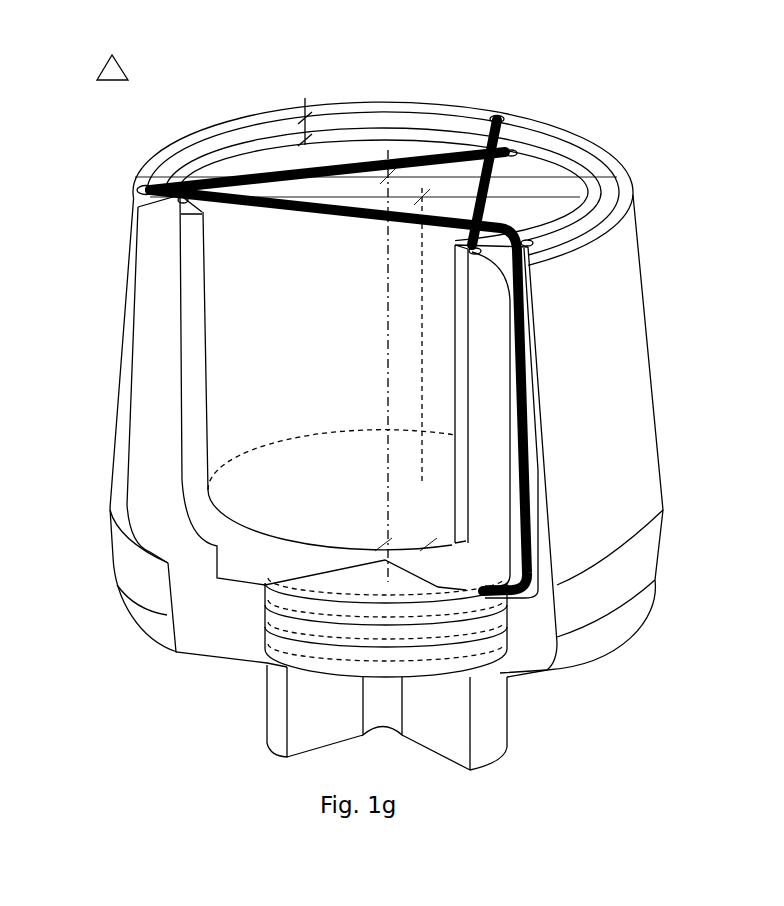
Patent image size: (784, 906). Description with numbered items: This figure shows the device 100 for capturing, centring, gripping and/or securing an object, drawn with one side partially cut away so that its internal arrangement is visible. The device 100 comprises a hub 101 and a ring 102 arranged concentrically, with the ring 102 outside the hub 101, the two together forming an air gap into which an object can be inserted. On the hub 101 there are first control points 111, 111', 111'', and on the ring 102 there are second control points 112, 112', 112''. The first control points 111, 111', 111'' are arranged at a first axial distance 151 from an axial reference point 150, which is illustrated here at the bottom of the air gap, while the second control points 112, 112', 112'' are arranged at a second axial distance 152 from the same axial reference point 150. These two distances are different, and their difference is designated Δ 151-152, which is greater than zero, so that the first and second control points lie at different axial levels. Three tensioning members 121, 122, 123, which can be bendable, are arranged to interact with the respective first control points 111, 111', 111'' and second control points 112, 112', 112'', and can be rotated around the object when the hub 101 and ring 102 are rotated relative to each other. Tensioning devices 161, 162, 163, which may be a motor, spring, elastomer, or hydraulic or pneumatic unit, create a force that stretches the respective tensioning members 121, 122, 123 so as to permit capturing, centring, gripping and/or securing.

The device 100 is at (754, 137).
The hub 101 is at (190, 403).
The ring 102 is at (153, 280).
The first control point 111 is at (567, 120).
The first control point 111' is at (595, 273).
The first control point 111'' is at (242, 230).
The second control point 112 is at (97, 163).
The second control point 112' is at (442, 85).
The second control point 112'' is at (624, 225).
The tensioning member 121 is at (253, 172).
The tensioning member 122 is at (505, 140).
The tensioning member 123 is at (398, 228).
The axial reference point 150 is at (352, 548).
The first axial distance 151 is at (422, 367).
The second axial distance 152 is at (390, 308).
The difference between first and second distances 151-152 is at (307, 130).
The tensioning device 161 is at (386, 659).
The tensioning device 162 is at (386, 633).
The tensioning device 163 is at (386, 613).